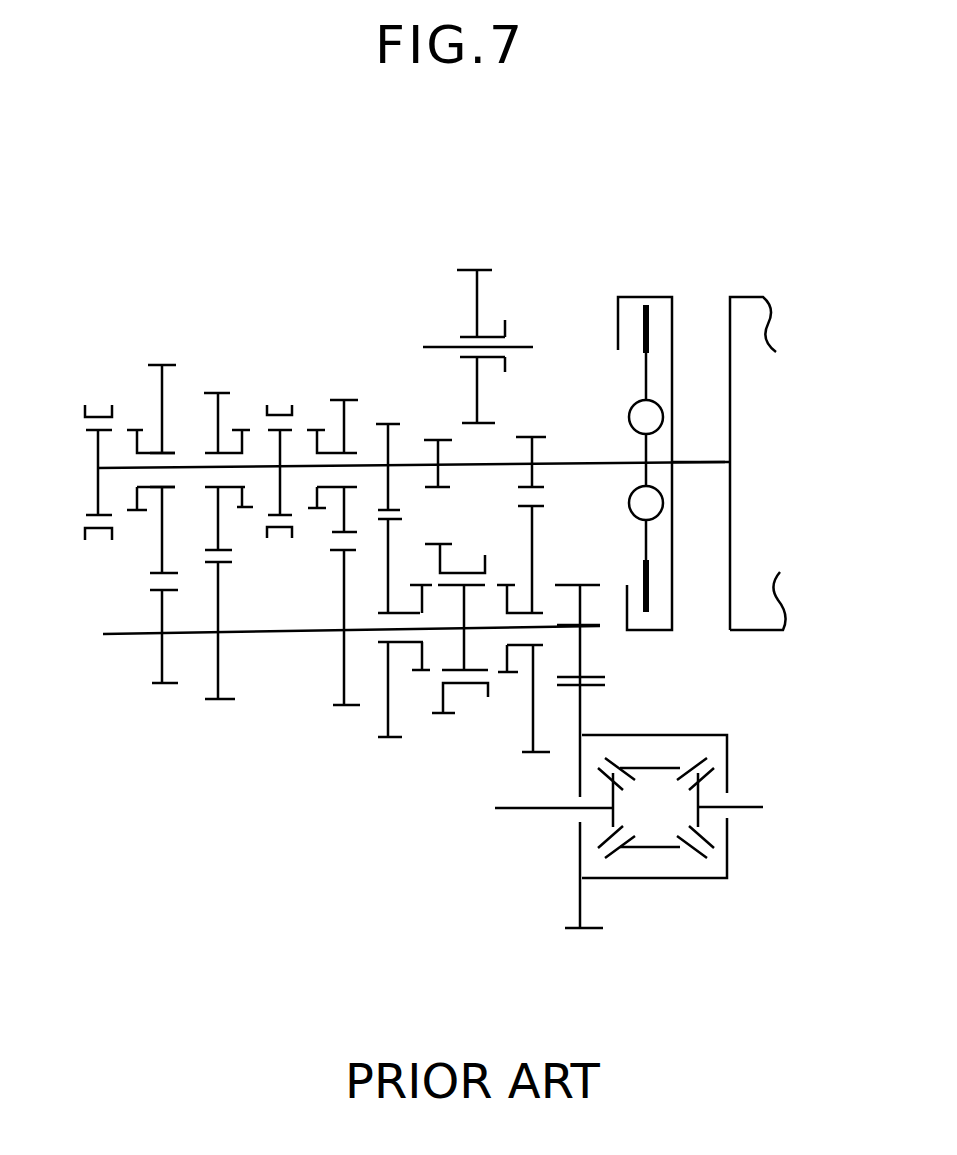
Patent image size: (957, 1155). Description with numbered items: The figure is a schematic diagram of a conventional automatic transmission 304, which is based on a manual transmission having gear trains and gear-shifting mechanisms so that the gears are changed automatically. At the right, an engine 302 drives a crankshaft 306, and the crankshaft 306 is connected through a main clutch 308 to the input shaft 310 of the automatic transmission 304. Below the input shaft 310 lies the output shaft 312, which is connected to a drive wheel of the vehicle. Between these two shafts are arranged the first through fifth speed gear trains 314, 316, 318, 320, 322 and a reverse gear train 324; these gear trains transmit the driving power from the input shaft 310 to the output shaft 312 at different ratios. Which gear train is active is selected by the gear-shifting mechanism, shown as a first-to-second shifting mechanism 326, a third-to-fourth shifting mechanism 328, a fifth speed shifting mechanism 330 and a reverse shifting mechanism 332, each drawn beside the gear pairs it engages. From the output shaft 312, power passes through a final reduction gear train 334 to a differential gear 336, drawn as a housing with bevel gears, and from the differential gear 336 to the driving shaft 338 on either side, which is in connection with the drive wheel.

The engine 302 is at (763, 290).
The automatic transmission 304 is at (185, 247).
The crankshaft 306 is at (698, 460).
The main clutch 308 is at (655, 288).
The input shaft 310 is at (580, 462).
The output shaft 312 is at (123, 640).
The first speed gear train 314 is at (532, 430).
The second speed gear train 316 is at (399, 757).
The third speed gear train 318 is at (348, 712).
The fourth speed gear train 320 is at (230, 708).
The fifth speed gear train 322 is at (168, 690).
The reverse gear train 324 is at (466, 267).
The first-to-second shifting mechanism 326 is at (465, 700).
The third-to-fourth shifting mechanism 328 is at (280, 397).
The fifth speed shifting mechanism 330 is at (98, 400).
The reverse shifting mechanism 332 is at (486, 327).
The final reduction gear train 334 is at (615, 678).
The differential gear 336 is at (663, 900).
The driving shaft 338 is at (548, 810).